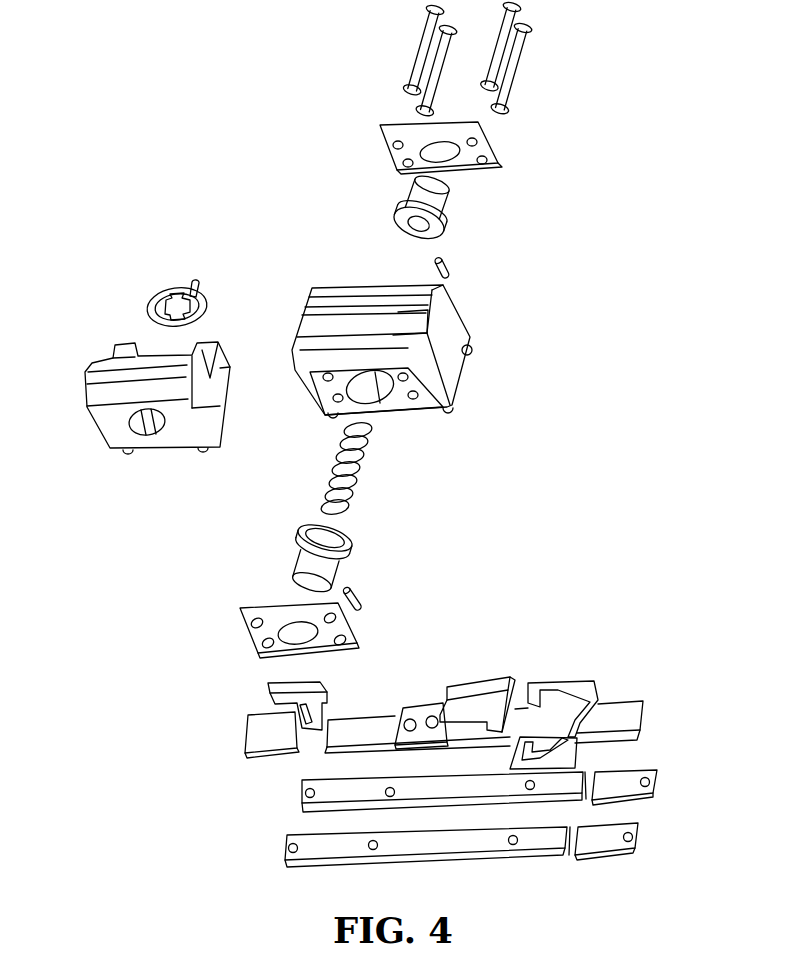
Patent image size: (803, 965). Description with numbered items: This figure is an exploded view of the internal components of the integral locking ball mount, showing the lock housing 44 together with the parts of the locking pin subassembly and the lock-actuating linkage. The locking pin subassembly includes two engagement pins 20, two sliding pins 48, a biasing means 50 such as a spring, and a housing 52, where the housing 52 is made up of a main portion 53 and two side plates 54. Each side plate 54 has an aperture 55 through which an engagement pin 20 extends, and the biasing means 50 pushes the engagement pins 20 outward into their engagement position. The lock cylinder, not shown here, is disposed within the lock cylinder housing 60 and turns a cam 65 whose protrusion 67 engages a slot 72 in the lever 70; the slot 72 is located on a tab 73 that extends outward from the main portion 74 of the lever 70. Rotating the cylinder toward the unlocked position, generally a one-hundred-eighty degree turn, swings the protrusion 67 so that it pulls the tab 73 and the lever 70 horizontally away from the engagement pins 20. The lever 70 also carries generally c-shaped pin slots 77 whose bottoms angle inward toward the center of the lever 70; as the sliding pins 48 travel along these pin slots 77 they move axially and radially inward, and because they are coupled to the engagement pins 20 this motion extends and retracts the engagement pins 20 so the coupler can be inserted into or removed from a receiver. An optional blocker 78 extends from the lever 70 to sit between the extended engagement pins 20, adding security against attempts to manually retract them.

The engagement pin 20 is at (442, 198).
The lock housing 44 is at (108, 430).
The sliding pin 48 is at (448, 265).
The biasing means 50 is at (360, 468).
The housing 52 is at (448, 358).
The main portion 53 is at (442, 402).
The side plate 54 is at (358, 635).
The aperture 55 is at (287, 645).
The lock cylinder housing 60 is at (167, 427).
The cam 65 is at (203, 310).
The protrusion 67 is at (190, 287).
The lever 70 is at (630, 702).
The slot 72 is at (310, 727).
The tab 73 is at (268, 695).
The main portion 74 is at (350, 715).
The pin slot 77 is at (558, 688).
The blocker 78 is at (477, 692).